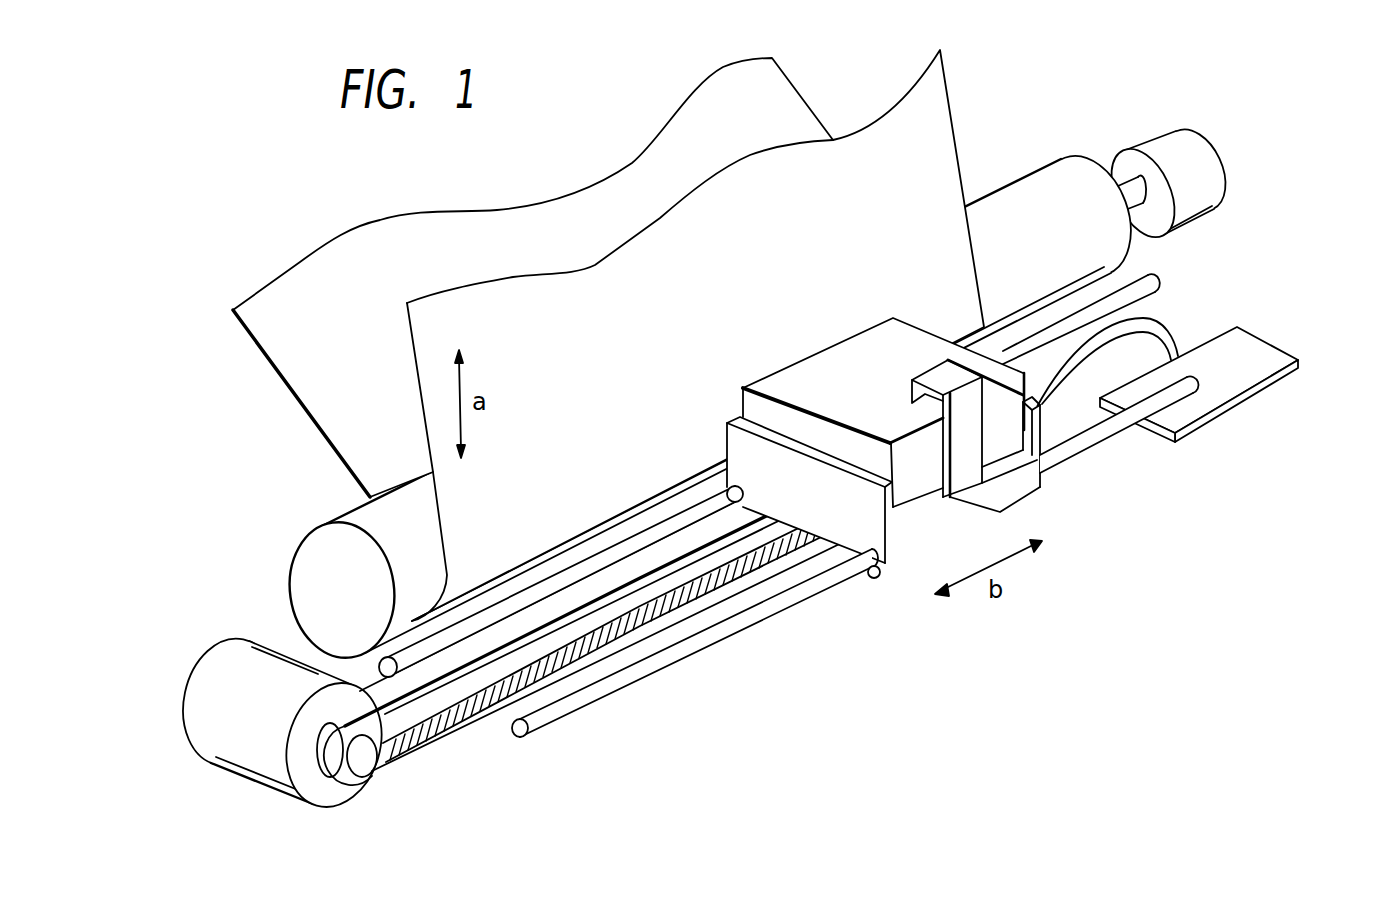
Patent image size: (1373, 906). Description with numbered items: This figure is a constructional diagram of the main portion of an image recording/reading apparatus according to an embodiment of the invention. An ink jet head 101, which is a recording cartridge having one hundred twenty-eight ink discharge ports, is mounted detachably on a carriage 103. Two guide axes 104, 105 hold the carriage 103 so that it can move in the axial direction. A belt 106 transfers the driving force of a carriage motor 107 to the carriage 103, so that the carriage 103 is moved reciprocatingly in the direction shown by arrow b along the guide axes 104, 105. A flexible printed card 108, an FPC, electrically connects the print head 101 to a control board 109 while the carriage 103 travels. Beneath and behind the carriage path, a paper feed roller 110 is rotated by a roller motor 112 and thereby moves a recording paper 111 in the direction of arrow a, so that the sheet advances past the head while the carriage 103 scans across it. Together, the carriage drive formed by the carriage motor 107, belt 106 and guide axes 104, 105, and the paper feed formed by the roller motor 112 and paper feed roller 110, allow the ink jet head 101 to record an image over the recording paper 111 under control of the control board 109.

The ink jet head 101 is at (745, 398).
The carriage 103 is at (735, 463).
The guide axis 104 is at (1153, 280).
The guide axis 105 is at (1182, 390).
The belt 106 is at (462, 727).
The carriage motor 107 is at (202, 702).
The flexible printed card 108 is at (1173, 333).
The control board 109 is at (1267, 350).
The paper feed roller 110 is at (1077, 167).
The recording paper 111 is at (947, 130).
The roller motor 112 is at (1197, 150).